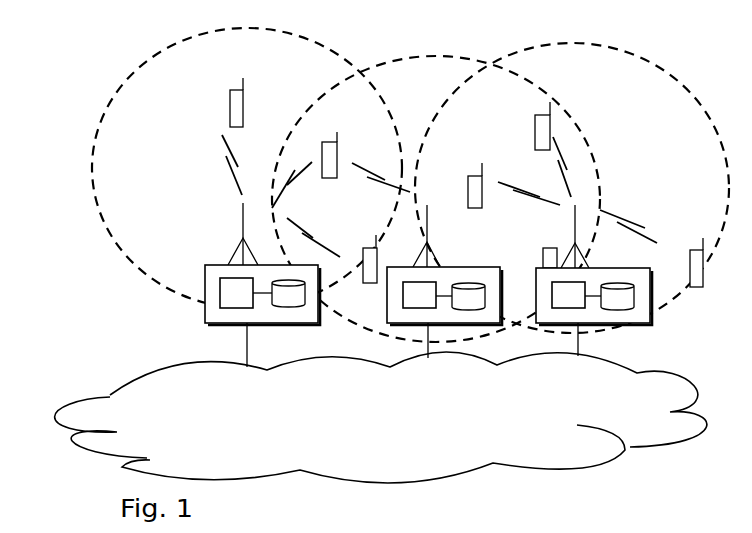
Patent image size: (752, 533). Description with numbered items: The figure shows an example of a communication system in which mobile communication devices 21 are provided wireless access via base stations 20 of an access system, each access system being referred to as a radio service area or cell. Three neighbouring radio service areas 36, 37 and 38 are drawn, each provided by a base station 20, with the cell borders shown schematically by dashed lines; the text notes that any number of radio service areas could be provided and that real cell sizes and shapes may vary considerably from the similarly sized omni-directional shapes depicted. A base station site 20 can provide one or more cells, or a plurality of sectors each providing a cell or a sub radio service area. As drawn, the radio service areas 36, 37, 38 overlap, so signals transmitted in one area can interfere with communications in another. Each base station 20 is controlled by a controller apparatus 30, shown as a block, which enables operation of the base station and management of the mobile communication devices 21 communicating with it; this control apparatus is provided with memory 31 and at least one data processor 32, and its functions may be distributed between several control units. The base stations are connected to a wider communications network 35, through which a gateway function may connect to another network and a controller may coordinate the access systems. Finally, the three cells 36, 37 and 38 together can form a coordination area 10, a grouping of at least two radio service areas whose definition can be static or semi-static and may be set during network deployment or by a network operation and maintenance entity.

The coordination area 10 is at (86, 82).
The base station 20 is at (243, 228).
The mobile communication device 21 is at (230, 103).
The controller apparatus 30 is at (205, 273).
The memory 31 is at (270, 303).
The data processor 32 is at (220, 289).
The communications network 35 is at (110, 397).
The radio service area 36 is at (300, 106).
The radio service area 37 is at (440, 110).
The radio service area 38 is at (630, 108).